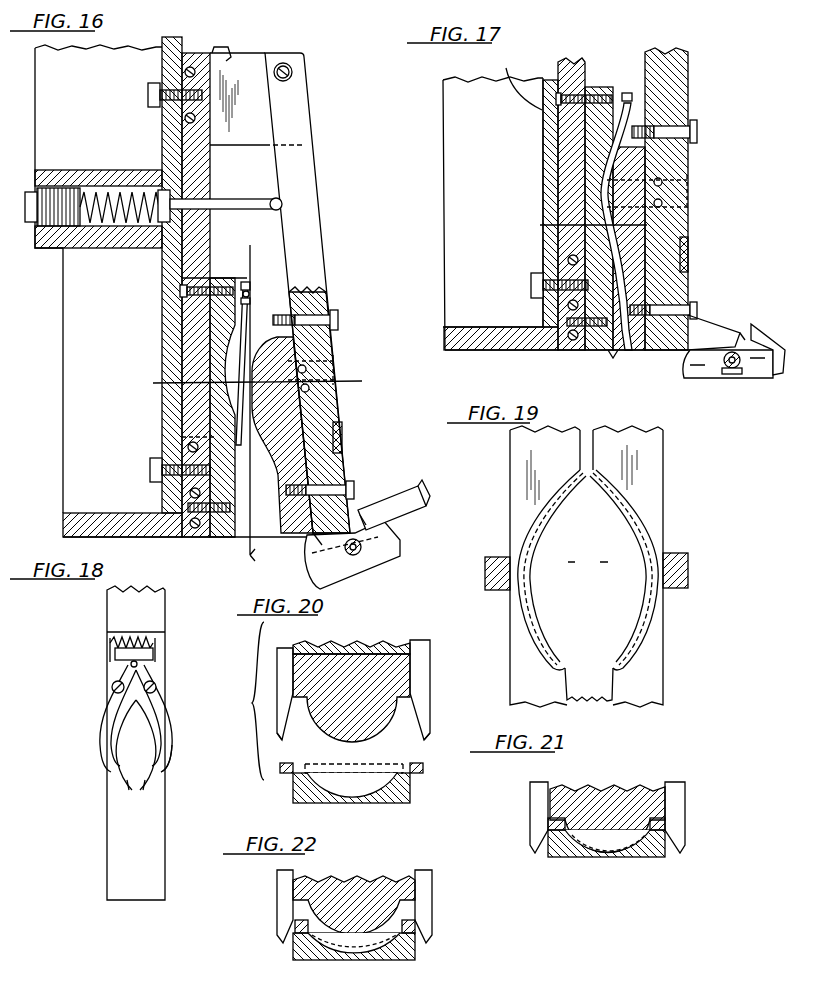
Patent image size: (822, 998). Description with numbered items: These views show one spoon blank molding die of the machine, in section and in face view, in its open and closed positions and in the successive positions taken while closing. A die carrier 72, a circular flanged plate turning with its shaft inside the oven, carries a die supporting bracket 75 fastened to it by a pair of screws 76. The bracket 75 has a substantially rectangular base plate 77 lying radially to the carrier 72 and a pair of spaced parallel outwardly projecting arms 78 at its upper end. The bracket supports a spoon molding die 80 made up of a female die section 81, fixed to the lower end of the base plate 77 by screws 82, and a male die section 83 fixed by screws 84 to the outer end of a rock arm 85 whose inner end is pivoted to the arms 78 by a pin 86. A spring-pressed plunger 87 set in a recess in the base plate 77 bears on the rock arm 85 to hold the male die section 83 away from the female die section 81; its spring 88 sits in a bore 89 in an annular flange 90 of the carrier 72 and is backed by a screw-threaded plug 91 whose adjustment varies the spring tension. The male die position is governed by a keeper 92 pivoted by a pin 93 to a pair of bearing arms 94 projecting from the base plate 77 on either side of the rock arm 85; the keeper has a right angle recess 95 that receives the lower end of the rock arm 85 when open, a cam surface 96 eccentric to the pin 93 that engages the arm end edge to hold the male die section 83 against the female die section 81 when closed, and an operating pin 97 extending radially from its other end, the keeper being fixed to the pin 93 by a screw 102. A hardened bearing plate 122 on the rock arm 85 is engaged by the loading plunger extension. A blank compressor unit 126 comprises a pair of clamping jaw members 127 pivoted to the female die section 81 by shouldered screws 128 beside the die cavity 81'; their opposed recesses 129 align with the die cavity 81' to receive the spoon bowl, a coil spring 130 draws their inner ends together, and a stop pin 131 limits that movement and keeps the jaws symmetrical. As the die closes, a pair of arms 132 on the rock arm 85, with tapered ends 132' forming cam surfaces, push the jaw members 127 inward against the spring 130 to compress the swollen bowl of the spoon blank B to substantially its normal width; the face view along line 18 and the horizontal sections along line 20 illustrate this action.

In FIG. 16, the section line 18— 18 is at (246, 402).
In FIG. 16, the section line 20— 20 is at (250, 381).
In FIG. 16, the die carrier 72 is at (63, 255).
In FIG. 17, the die carrier 72 is at (500, 93).
In FIG. 16, the die supporting bracket 75 is at (222, 56).
In FIG. 16, the screw 76 is at (148, 95).
In FIG. 17, the screw 76 is at (530, 283).
In FIG. 16, the base plate 77 is at (182, 268).
In FIG. 17, the base plate 77 is at (566, 75).
In FIG. 16, the outwardly projecting arm 78 is at (245, 63).
In FIG. 16, the spoon molding die 80 is at (240, 535).
In FIG. 17, the spoon molding die 80 is at (614, 356).
In FIG. 16, the female die section 81 is at (169, 295).
In FIG. 17, the female die section 81 is at (602, 201).
In FIG. 18, the female die section 81 is at (153, 743).
In FIG. 19, the female die section 81 is at (605, 566).
In FIG. 20, the female die section 81 is at (353, 804).
In FIG. 21, the female die section 81 is at (606, 858).
In FIG. 22, the female die section 81 is at (354, 959).
In FIG. 16, the die cavity 81' is at (179, 407).
In FIG. 18, the die cavity 81' is at (109, 755).
In FIG. 16, the screw 82 is at (185, 290).
In FIG. 17, the screw 82 is at (568, 103).
In FIG. 16, the male die section 83 is at (283, 422).
In FIG. 17, the male die section 83 is at (638, 222).
In FIG. 20, the male die section 83 is at (352, 660).
In FIG. 21, the male die section 83 is at (620, 800).
In FIG. 22, the male die section 83 is at (363, 888).
In FIG. 16, the screw 84 is at (338, 320).
In FIG. 17, the screw 84 is at (697, 131).
In FIG. 16, the rock arm 85 is at (308, 183).
In FIG. 17, the rock arm 85 is at (676, 80).
In FIG. 20, the rock arm 85 is at (400, 648).
In FIG. 16, the pin 86 is at (294, 72).
In FIG. 16, the spring-pressed plunger 87 is at (228, 203).
In FIG. 16, the spring 88 is at (158, 196).
In FIG. 16, the bore 89 is at (98, 192).
In FIG. 16, the annular flange 90 is at (55, 172).
In FIG. 16, the plug 91 is at (33, 224).
In FIG. 16, the keeper 92 is at (372, 545).
In FIG. 17, the keeper 92 is at (757, 370).
In FIG. 16, the pin 93 is at (360, 556).
In FIG. 17, the pin 93 is at (725, 367).
In FIG. 16, the bearing arm 94 is at (318, 541).
In FIG. 17, the bearing arm 94 is at (699, 320).
In FIG. 16, the right angle recess 95 is at (367, 513).
In FIG. 17, the right angle recess 95 is at (746, 331).
In FIG. 16, the cam surface 96 is at (318, 585).
In FIG. 17, the cam surface 96 is at (684, 373).
In FIG. 16, the operating pin 97 is at (420, 510).
In FIG. 17, the operating pin 97 is at (780, 345).
In FIG. 17, the screw 102 is at (732, 378).
In FIG. 16, the hardened bearing plate 122 is at (342, 437).
In FIG. 17, the hardened bearing plate 122 is at (690, 254).
In FIG. 18, the blank compressor unit 126 is at (112, 668).
In FIG. 16, the clamping jaw member 127 is at (243, 352).
In FIG. 18, the clamping jaw member 127 is at (157, 700).
In FIG. 19, the clamping jaw member 127 is at (512, 466).
In FIG. 20, the clamping jaw member 127 is at (285, 775).
In FIG. 21, the clamping jaw member 127 is at (555, 826).
In FIG. 22, the clamping jaw member 127 is at (300, 925).
In FIG. 18, the shouldered screw 128 is at (146, 689).
In FIG. 18, the recess 129 is at (165, 752).
In FIG. 16, the coil spring 130 is at (260, 283).
In FIG. 17, the coil spring 130 is at (637, 93).
In FIG. 18, the coil spring 130 is at (137, 635).
In FIG. 16, the stop pin 131 is at (258, 299).
In FIG. 18, the stop pin 131 is at (140, 660).
In FIG. 16, the arm 132 is at (334, 368).
In FIG. 17, the arm 132 is at (672, 190).
In FIG. 19, the arm 132 is at (601, 588).
In FIG. 20, the arm 132 is at (374, 677).
In FIG. 21, the arm 132 is at (611, 817).
In FIG. 22, the arm 132 is at (356, 906).
In FIG. 20, the tapered end 132' is at (382, 721).
In FIG. 17, the blank B is at (581, 222).
In FIG. 19, the blank B is at (588, 561).
In FIG. 20, the blank B is at (378, 765).
In FIG. 21, the blank B is at (600, 852).
In FIG. 22, the blank B is at (336, 950).